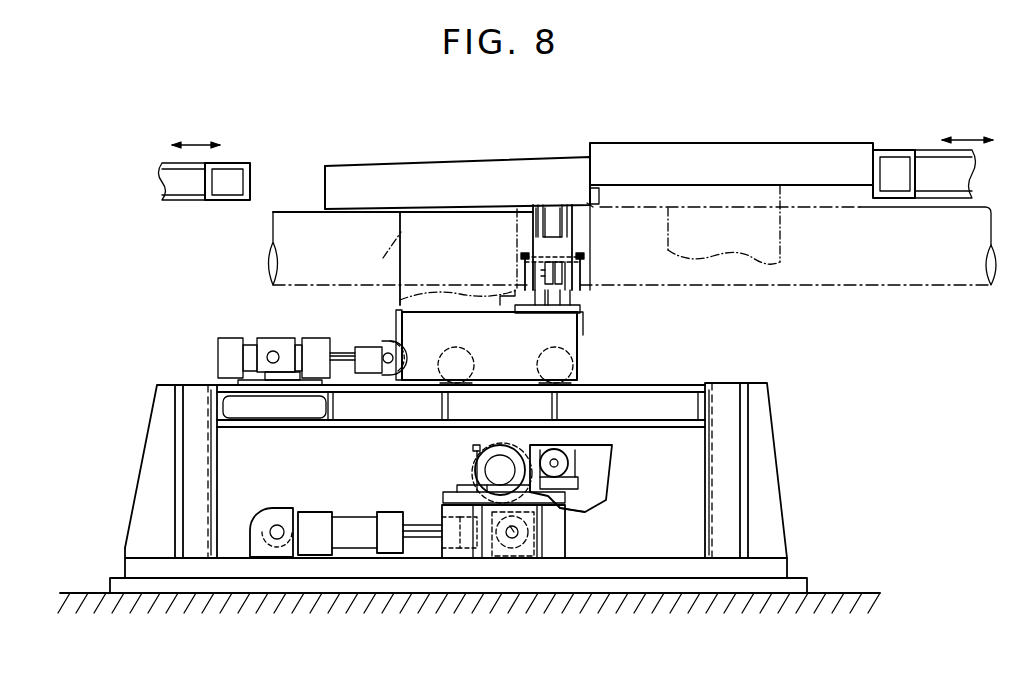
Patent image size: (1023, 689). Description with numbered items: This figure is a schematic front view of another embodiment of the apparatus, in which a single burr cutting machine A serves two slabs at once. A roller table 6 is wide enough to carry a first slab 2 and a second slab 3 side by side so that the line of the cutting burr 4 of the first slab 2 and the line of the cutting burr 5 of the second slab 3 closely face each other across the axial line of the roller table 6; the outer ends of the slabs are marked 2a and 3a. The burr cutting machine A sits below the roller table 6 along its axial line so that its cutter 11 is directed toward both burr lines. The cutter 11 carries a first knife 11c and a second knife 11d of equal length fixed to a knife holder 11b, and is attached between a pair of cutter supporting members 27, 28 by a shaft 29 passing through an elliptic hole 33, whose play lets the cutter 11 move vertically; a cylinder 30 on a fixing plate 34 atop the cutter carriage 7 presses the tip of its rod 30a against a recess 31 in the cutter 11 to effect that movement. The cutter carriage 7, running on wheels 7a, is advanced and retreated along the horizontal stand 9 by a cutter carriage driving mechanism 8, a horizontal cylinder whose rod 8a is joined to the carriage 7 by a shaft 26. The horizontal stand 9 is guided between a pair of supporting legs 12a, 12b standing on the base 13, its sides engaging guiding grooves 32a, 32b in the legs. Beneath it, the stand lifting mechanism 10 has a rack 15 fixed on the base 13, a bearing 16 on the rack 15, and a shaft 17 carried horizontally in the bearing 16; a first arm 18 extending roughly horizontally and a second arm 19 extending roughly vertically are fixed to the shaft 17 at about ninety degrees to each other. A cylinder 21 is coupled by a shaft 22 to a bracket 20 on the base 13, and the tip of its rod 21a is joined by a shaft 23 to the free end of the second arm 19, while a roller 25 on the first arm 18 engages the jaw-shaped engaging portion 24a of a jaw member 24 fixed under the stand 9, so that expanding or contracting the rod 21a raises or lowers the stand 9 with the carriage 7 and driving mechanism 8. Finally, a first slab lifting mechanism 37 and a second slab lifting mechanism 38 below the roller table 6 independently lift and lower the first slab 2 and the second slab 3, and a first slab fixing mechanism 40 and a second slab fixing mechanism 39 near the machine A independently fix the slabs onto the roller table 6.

The first slab 2 is at (458, 164).
The bar end 2a is at (326, 166).
The second slab 3 is at (794, 140).
The bar end 3a is at (878, 149).
The cutting burr 4 is at (592, 204).
The cutting burr 5 is at (599, 189).
The roller table 6 is at (297, 207).
The cutter carriage 7 is at (577, 354).
The wheels 7a is at (443, 384).
The cutter carriage driving mechanism 8 is at (292, 336).
The rod 8a is at (346, 352).
The horizontal stand 9 is at (684, 384).
The stand lifting mechanism 10 is at (428, 478).
The cutter 11 is at (576, 240).
The knife holder 11b is at (547, 206).
The first knife 11c is at (558, 222).
The second knife 11d is at (540, 210).
The supporting leg 12a is at (768, 442).
The supporting leg 12b is at (150, 441).
The base 13 is at (110, 586).
The rack 15 is at (566, 546).
The bearing 16 is at (472, 454).
The shaft 17 is at (488, 472).
The first arm 18 is at (550, 518).
The second arm 19 is at (487, 485).
The bracket 20 is at (256, 540).
The cylinder 21 is at (347, 516).
The rod 21a is at (414, 514).
The shaft 22 is at (277, 524).
The shaft 23 is at (512, 532).
The jaw member 24 is at (613, 457).
The jaw-shaped engaging portion 24a is at (590, 500).
The roller 25 is at (548, 448).
The shaft 26 is at (386, 346).
The cutter supporting member 27 is at (580, 296).
The cutter supporting member 28 is at (505, 306).
The shaft 29 is at (584, 258).
The cylinder 30 is at (572, 306).
The rod 30a is at (544, 282).
The recess 31 is at (555, 270).
The guiding groove 32a is at (708, 478).
The guiding groove 32b is at (218, 457).
The elliptic hole 33 is at (582, 278).
The fixing plate 34 is at (582, 318).
The first slab lifting mechanism 37 is at (400, 257).
The second slab lifting mechanism 38 is at (786, 244).
The second slab fixing mechanism 39 is at (246, 165).
The first slab fixing mechanism 40 is at (917, 150).
The burr cutting machine A is at (247, 325).